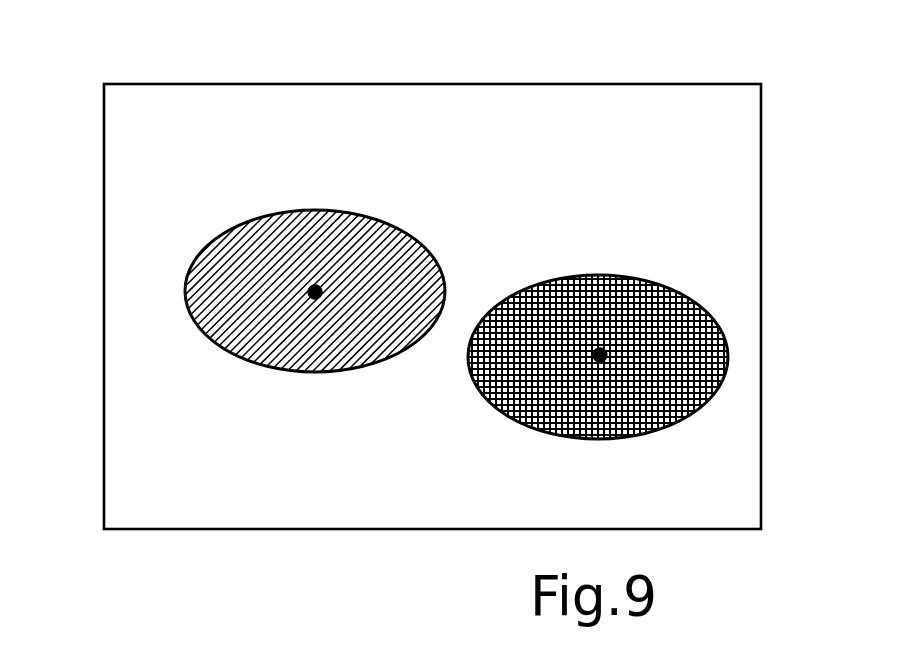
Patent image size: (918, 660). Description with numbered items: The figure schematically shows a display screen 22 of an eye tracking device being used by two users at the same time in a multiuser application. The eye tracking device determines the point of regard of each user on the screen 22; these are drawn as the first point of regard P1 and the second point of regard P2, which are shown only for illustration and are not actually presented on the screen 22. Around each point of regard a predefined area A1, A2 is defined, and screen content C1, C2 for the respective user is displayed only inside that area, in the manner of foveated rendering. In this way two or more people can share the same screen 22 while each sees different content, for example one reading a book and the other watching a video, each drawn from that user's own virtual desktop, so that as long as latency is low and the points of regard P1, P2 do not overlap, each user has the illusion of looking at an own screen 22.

The display screen 22 is at (583, 83).
The predefined area A1 is at (243, 362).
The screen content C1 is at (212, 273).
The point of regard P1 is at (315, 290).
The predefined area A2 is at (702, 405).
The screen content C2 is at (705, 355).
The point of regard P2 is at (600, 355).